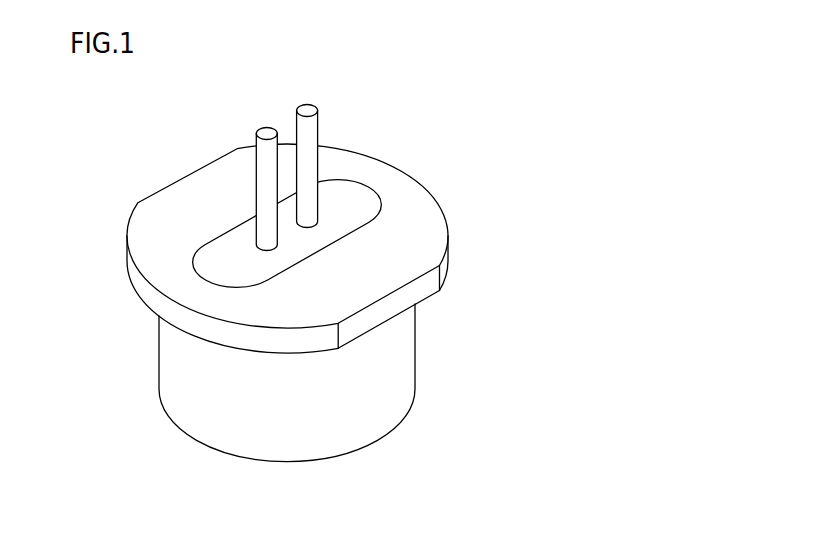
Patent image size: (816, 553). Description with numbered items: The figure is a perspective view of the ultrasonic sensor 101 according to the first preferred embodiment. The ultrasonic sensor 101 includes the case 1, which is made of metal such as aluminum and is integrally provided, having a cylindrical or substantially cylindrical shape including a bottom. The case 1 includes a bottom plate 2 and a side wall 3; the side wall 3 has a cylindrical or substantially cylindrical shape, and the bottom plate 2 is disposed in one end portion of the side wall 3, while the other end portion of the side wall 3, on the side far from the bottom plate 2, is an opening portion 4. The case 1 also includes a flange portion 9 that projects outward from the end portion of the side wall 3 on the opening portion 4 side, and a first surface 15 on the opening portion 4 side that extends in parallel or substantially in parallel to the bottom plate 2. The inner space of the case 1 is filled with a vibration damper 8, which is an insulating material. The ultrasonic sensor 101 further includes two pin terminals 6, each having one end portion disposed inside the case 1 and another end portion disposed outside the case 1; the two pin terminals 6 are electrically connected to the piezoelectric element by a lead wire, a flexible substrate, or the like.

The ultrasonic sensor 101 is at (380, 104).
The case 1 is at (450, 503).
The bottom plate 2 is at (297, 433).
The side wall 3 is at (365, 425).
The flange portion 9 is at (442, 266).
The opening portion 4 is at (190, 257).
The first surface 15 is at (405, 190).
The vibration damper 8 is at (214, 250).
The pin terminals 6 is at (318, 122).